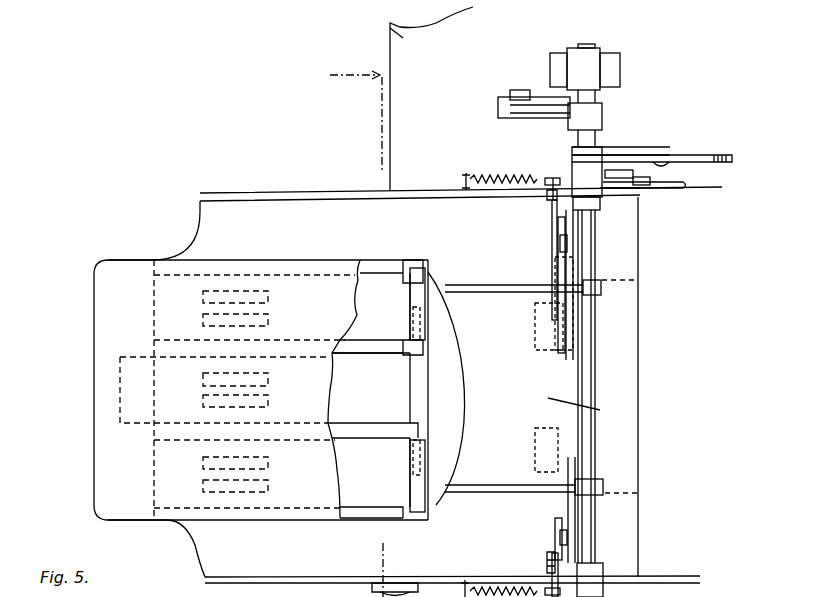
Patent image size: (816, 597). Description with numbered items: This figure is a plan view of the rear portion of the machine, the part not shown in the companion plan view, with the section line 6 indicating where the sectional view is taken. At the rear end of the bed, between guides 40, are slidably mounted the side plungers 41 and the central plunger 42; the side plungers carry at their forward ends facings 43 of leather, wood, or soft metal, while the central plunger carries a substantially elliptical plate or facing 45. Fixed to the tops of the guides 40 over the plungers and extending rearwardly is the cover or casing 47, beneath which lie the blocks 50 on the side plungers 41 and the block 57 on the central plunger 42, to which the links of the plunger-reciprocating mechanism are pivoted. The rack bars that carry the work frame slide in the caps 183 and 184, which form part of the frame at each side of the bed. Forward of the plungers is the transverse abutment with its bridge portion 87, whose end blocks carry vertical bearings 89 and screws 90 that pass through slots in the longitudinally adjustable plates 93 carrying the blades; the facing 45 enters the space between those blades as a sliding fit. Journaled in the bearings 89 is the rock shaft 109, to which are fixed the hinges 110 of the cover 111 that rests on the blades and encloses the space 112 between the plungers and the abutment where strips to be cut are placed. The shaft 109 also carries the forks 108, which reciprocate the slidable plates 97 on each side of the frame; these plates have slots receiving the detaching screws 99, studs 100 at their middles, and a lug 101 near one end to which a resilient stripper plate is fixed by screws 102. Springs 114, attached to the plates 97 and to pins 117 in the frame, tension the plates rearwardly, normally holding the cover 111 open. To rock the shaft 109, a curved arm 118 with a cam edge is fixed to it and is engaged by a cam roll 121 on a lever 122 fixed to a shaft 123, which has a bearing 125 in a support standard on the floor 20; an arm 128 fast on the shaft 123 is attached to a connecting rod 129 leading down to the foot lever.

The floor 20 is at (403, 38).
The section line 6 6 is at (374, 330).
The cap 183 is at (330, 191).
The cap 184 is at (315, 576).
The cover or casing 47 is at (115, 310).
The blocks 50 is at (210, 297).
The block 57 is at (210, 384).
The guides 40 is at (365, 270).
The side plungers 41 is at (375, 306).
The central plunger 42 is at (352, 389).
The facings 43 is at (428, 290).
The elliptical plate or facing 45 is at (430, 395).
The space 112 is at (450, 413).
The bridge portion 87 is at (640, 382).
The rock shaft 109 is at (588, 364).
The vertical bearings 89 is at (593, 207).
The plates 93 is at (570, 263).
The hinges 110 is at (603, 289).
The cover 111 is at (600, 410).
The screws 90 is at (560, 243).
The screws 102 is at (547, 212).
The lug 101 is at (548, 196).
The detaching screws 99 is at (548, 178).
The springs 114 is at (505, 175).
The pins 117 is at (463, 186).
The lever 122 is at (612, 174).
The curved arm 118 is at (680, 157).
The cam roll 121 is at (660, 148).
The studs 100 is at (637, 168).
The slidable plates 97 is at (677, 185).
The bearing 125 is at (574, 62).
The shaft 123 is at (588, 46).
The arm 128 is at (505, 108).
The connecting rod 129 is at (522, 96).
The forks 108 is at (632, 197).